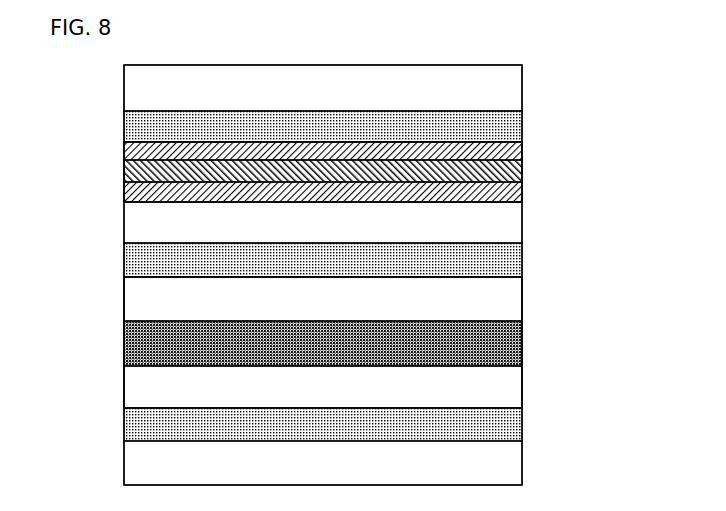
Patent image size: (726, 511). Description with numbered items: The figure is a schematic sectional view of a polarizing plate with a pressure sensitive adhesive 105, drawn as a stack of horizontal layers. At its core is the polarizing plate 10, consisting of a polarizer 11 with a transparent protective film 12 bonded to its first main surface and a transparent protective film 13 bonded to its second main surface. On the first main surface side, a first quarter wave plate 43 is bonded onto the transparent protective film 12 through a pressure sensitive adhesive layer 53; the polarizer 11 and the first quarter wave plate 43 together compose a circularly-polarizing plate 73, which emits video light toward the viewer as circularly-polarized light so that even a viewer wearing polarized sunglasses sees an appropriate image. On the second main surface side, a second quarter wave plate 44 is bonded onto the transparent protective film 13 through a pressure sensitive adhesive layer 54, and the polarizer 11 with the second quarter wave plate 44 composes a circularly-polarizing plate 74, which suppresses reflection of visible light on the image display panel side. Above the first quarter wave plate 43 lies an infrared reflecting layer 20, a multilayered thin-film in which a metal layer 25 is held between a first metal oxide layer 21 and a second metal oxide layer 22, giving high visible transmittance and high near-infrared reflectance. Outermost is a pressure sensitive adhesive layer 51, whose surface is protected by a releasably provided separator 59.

The polarizing plate with a pressure sensitive adhesive 105 is at (620, 103).
The separator 59 is at (518, 91).
The pressure sensitive adhesive layer 51 is at (522, 122).
The infrared reflecting layer 20 is at (582, 140).
The first metal oxide layer 21 is at (522, 150).
The metal layer 25 is at (522, 172).
The second metal oxide layer 22 is at (522, 195).
The first quarter wave plate 43 is at (520, 226).
The pressure sensitive adhesive layer 53 is at (522, 263).
The polarizing plate 10 is at (582, 295).
The transparent protective film 12 is at (520, 306).
The polarizer 11 is at (522, 344).
The transparent protective film 13 is at (520, 386).
The pressure sensitive adhesive layer 54 is at (522, 422).
The second quarter wave plate 44 is at (518, 460).
The circularly-polarizing plate 73 is at (123, 328).
The circularly-polarizing plate 74 is at (129, 470).